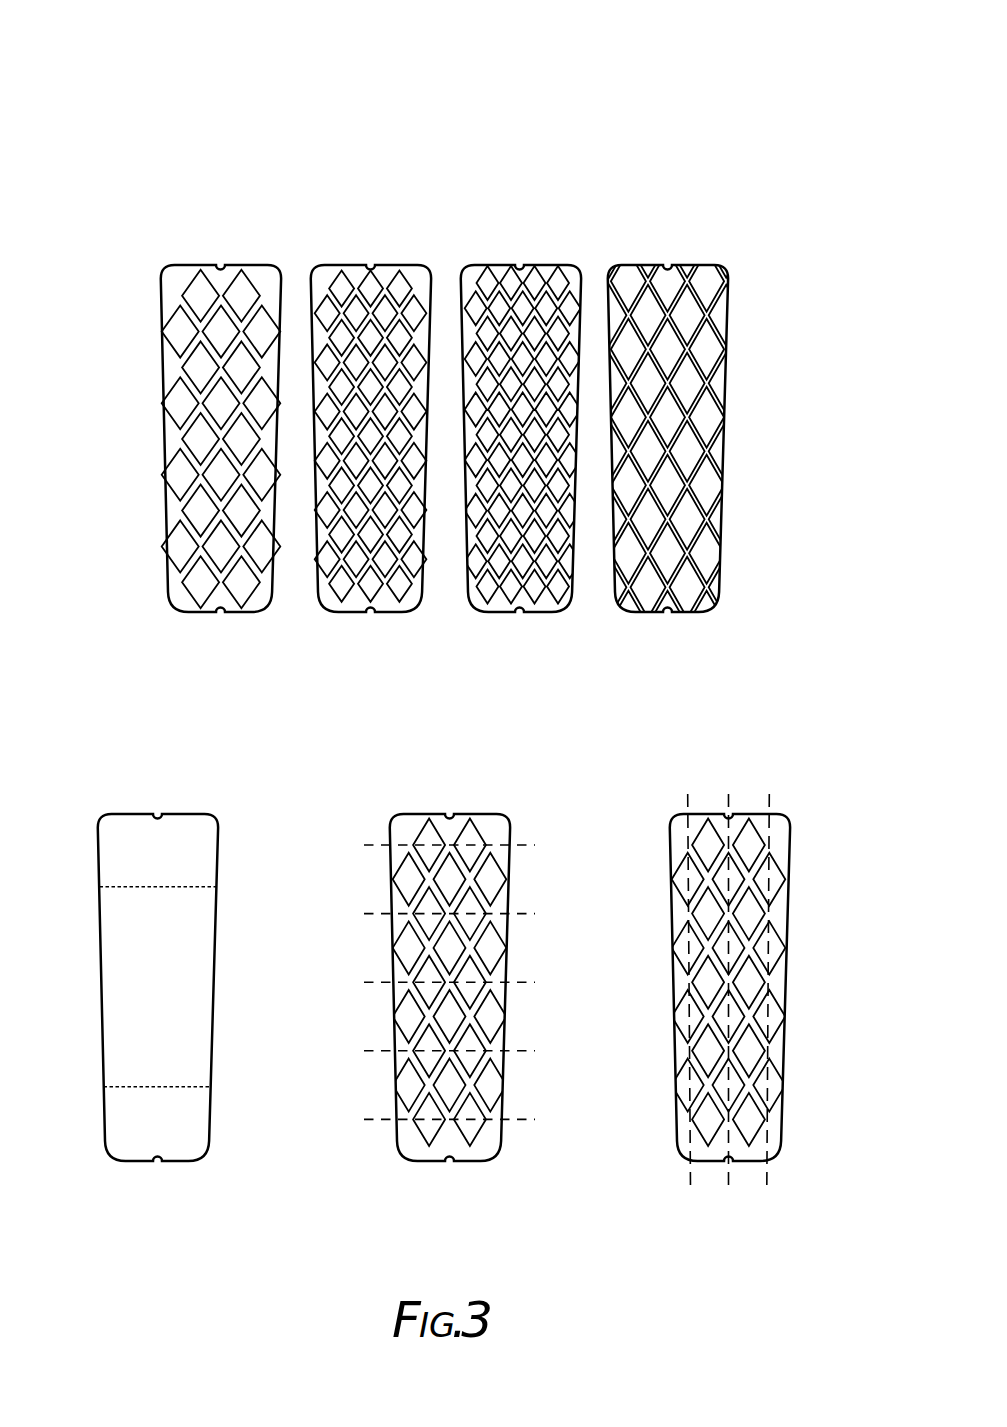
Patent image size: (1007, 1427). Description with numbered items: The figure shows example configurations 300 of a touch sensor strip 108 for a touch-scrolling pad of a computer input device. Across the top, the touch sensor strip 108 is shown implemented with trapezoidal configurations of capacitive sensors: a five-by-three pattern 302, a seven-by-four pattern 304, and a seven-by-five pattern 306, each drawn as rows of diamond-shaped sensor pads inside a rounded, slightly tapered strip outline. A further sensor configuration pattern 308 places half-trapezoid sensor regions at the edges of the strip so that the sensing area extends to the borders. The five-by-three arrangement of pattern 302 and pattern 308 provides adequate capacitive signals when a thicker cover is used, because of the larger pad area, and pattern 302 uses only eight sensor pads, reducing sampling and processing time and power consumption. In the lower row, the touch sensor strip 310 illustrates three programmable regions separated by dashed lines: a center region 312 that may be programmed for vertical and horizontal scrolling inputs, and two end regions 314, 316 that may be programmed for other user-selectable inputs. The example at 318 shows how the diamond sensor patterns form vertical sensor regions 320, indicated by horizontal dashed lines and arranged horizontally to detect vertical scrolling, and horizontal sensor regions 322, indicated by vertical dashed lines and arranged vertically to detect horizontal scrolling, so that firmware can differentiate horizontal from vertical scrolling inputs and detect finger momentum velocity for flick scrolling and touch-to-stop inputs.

The example configurations 300 is at (746, 62).
The 5×3 pattern 302 is at (221, 271).
The 7×4 pattern 304 is at (380, 269).
The 7×5 pattern 306 is at (533, 269).
The sensor configuration pattern 308 is at (713, 429).
The touch sensor strip 108 is at (721, 360).
The touch sensor strip with programmable regions 310 is at (208, 917).
The center region 312 is at (131, 960).
The end region 314 is at (131, 858).
The end region 316 is at (131, 1120).
The example touch sensor strip with sensor regions 318 is at (665, 982).
The vertical sensor regions 320 is at (500, 905).
The horizontal sensor regions 322 is at (763, 817).